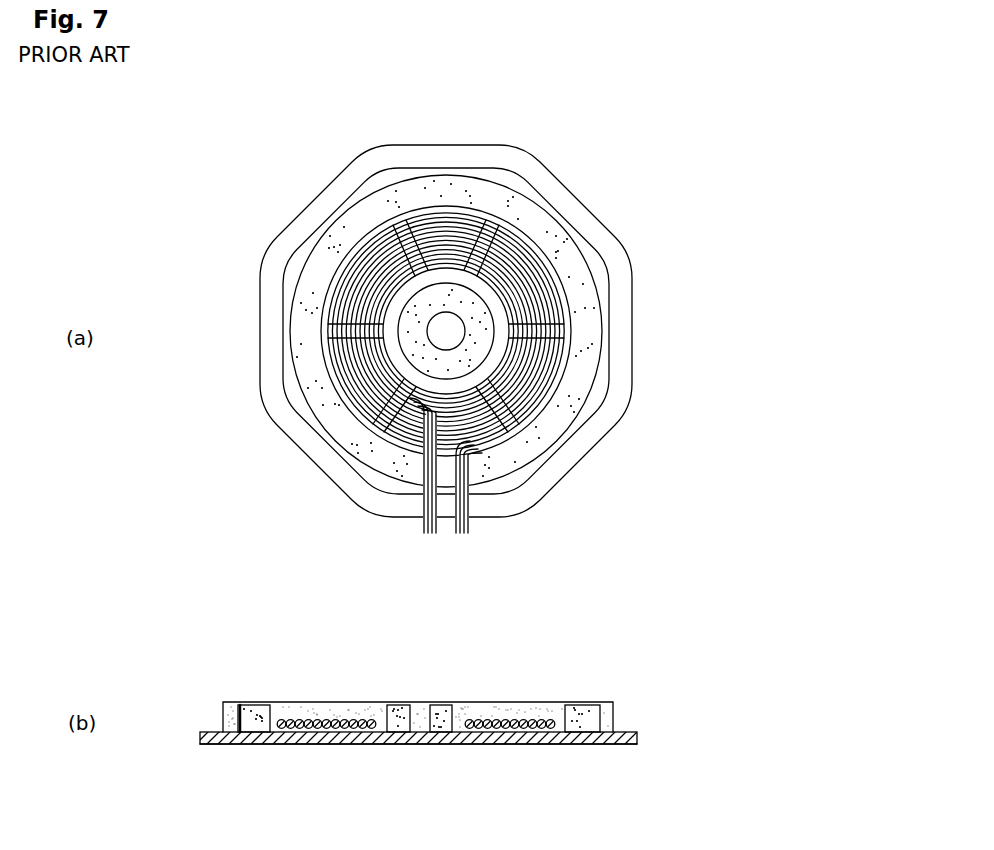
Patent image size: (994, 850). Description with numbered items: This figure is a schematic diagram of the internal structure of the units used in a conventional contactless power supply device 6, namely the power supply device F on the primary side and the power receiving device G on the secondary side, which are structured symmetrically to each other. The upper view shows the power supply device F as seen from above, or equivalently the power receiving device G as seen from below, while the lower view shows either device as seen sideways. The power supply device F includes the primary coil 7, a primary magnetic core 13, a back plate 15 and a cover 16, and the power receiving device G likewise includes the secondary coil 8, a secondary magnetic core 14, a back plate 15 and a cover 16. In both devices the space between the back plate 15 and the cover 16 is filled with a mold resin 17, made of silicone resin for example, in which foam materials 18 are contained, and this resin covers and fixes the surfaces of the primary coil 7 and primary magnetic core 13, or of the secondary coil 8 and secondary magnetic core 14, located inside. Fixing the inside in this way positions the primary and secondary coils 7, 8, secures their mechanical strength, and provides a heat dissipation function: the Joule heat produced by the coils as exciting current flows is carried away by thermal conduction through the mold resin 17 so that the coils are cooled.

The contactless power supply device 6 is at (641, 101).
The primary coil 7 is at (478, 465).
The secondary coil 8 is at (528, 280).
The primary magnetic core 13 is at (462, 548).
The secondary magnetic core 14 is at (556, 299).
The back plate 15 is at (572, 463).
The cover 16 is at (290, 700).
The mold resin 17 is at (342, 263).
The foam materials 18 is at (483, 357).
The power supply device F is at (623, 399).
The power receiving device G is at (568, 154).